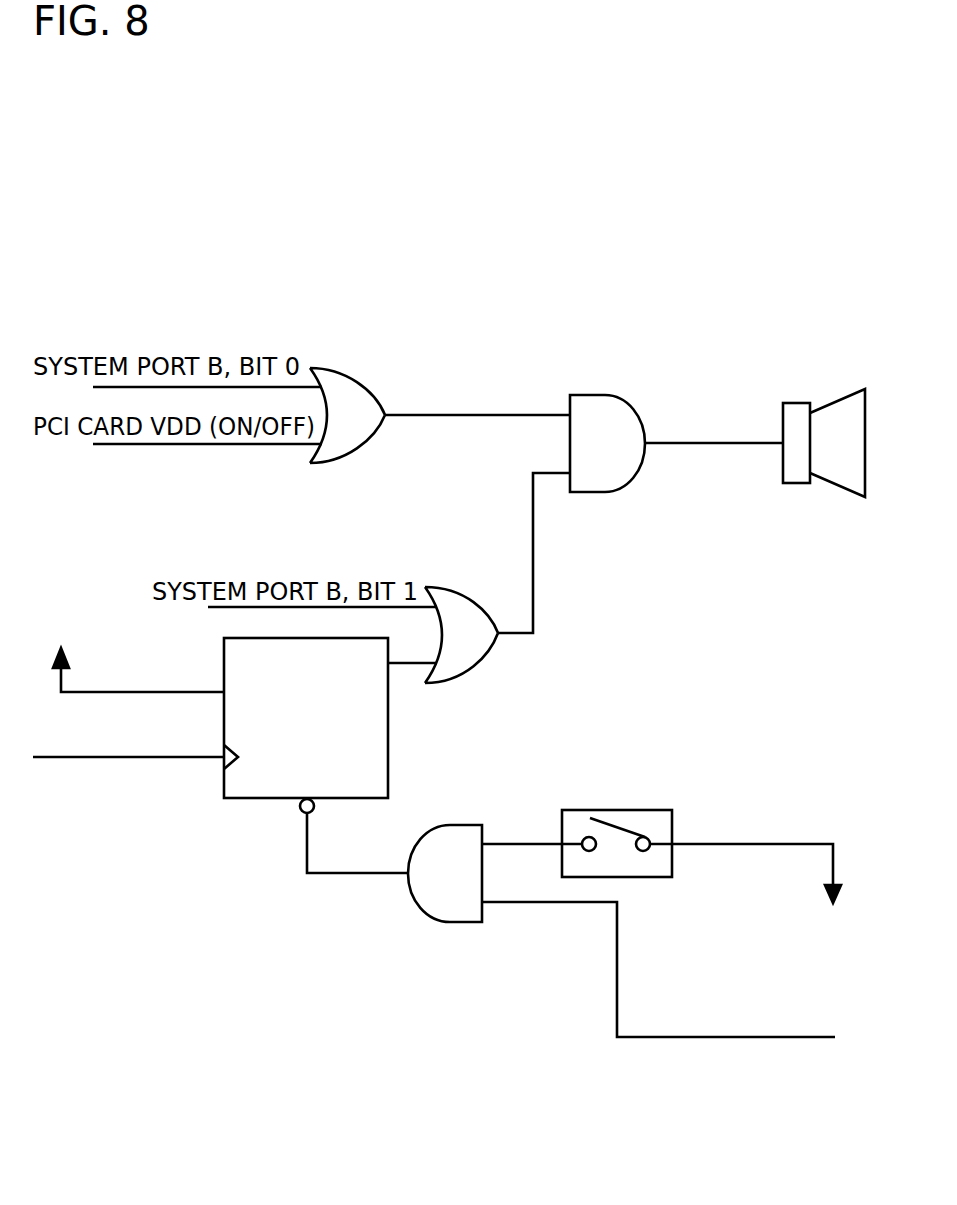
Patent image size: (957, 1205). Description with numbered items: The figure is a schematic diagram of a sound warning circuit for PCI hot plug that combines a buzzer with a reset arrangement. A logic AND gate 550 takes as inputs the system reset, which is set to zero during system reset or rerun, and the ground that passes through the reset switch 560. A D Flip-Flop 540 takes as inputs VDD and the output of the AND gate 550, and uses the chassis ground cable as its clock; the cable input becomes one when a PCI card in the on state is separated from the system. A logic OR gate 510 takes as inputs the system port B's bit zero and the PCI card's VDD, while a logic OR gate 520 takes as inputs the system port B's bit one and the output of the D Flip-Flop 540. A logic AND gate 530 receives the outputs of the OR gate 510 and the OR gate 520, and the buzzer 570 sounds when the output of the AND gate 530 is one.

The logic OR gate 510 is at (338, 369).
The logic OR gate 520 is at (458, 589).
The logic AND gate 530 is at (585, 395).
The D Flip-Flop 540 is at (388, 762).
The logic AND gate 550 is at (458, 923).
The reset switch 560 is at (672, 862).
The buzzer 570 is at (795, 484).